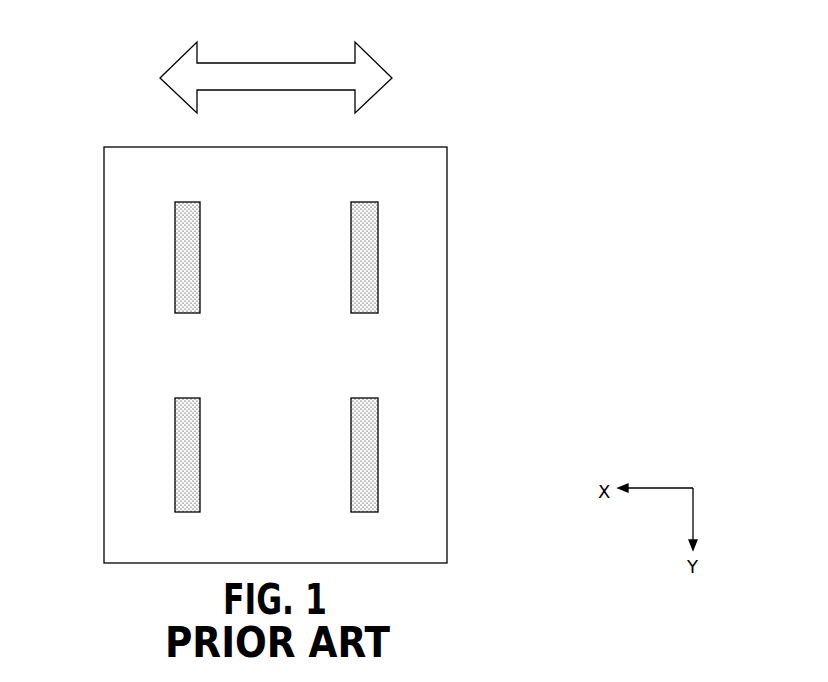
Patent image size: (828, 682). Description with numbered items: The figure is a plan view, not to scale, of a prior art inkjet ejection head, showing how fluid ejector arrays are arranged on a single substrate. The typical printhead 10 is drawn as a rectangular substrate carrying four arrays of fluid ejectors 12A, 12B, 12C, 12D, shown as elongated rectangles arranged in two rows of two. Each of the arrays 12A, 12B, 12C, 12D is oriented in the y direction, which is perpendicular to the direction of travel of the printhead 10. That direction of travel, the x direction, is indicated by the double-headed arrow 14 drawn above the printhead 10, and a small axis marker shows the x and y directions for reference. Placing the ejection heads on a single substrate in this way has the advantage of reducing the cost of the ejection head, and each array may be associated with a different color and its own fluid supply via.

The printhead 10 is at (432, 92).
The arrow 14 is at (275, 72).
The array of fluid ejectors 12A is at (178, 245).
The array of fluid ejectors 12B is at (378, 245).
The array of fluid ejectors 12C is at (178, 477).
The array of fluid ejectors 12D is at (378, 477).